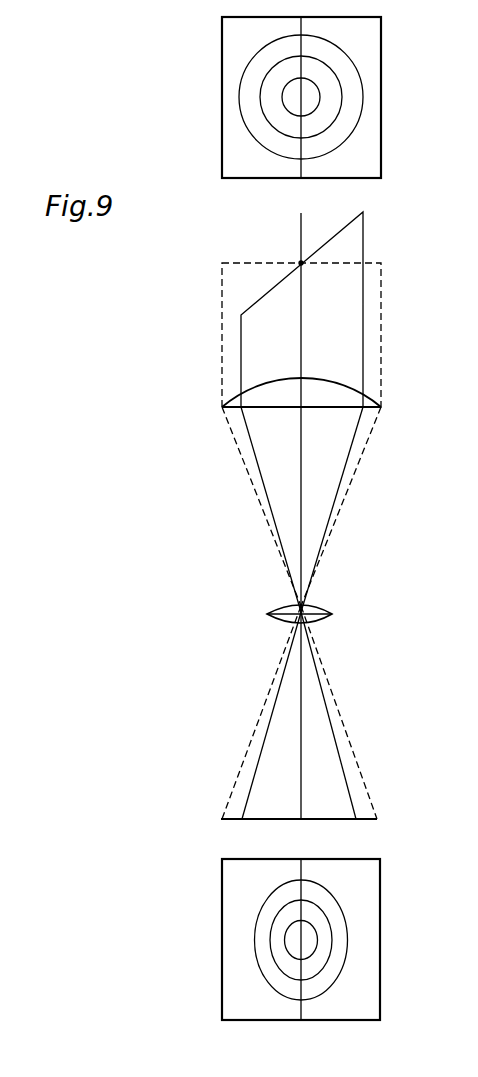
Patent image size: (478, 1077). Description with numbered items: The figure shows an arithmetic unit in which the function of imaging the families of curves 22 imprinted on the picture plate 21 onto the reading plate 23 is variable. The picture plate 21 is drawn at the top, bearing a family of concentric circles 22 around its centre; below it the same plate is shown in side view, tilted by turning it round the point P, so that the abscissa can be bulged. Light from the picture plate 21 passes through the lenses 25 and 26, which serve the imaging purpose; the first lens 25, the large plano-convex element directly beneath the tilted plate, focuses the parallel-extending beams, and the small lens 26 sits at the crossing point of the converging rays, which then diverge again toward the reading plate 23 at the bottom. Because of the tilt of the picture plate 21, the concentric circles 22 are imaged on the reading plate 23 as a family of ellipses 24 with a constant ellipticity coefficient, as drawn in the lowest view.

The picture plate 21 is at (377, 133).
The families of curves 22 is at (318, 88).
The reading plate 23 is at (340, 818).
The family of ellipses 24 is at (283, 948).
The lens 25 is at (367, 400).
The lens 26 is at (332, 611).